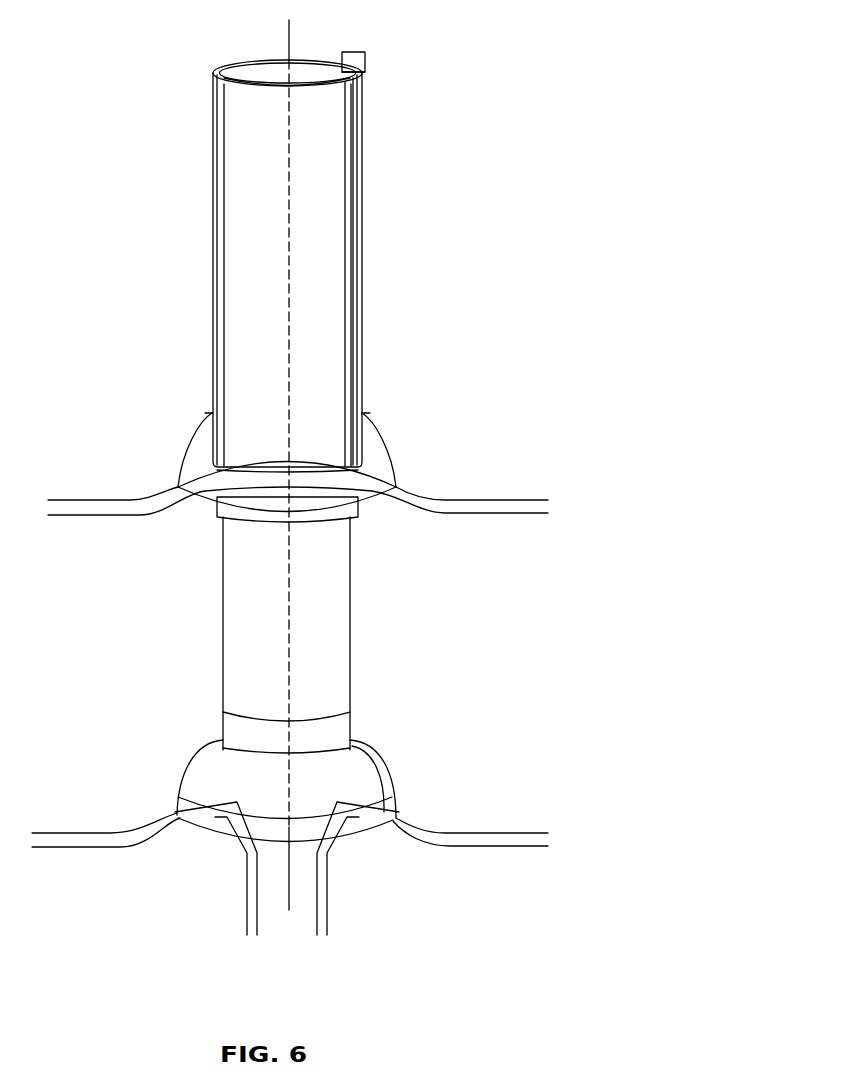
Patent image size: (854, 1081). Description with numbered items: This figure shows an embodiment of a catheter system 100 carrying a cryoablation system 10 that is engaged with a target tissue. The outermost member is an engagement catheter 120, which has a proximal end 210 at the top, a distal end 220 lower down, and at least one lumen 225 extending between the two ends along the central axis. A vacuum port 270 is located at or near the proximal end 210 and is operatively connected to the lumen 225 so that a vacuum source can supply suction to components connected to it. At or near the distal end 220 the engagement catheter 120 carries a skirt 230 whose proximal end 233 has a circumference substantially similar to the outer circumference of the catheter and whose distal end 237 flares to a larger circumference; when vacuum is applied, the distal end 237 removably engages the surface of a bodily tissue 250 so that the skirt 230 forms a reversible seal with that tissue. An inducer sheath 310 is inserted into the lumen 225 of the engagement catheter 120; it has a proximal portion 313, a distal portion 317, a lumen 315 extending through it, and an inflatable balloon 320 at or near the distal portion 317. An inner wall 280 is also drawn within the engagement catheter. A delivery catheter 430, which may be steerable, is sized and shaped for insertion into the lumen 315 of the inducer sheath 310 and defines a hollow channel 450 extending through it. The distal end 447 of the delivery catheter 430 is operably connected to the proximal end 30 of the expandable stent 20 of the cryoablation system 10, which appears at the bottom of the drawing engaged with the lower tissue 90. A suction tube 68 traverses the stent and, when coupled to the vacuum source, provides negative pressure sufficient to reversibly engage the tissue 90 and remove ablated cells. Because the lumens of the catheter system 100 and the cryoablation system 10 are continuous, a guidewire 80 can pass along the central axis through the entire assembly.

The cryoablation system 10 is at (494, 743).
The expandable stent 20 is at (388, 758).
The proximal end 30 is at (352, 719).
The suction tube 68 is at (380, 790).
The guidewire 80 is at (291, 870).
The tissue 90 is at (158, 812).
The catheter system 100 is at (147, 213).
The engagement catheter 120 is at (362, 147).
The proximal end 210 is at (368, 75).
The distal end 220 is at (152, 402).
The lumen 225 is at (247, 313).
The skirt 230 is at (373, 445).
The proximal end 233 is at (362, 417).
The distal end 237 is at (395, 487).
The tissue 250 is at (468, 503).
The vacuum port 270 is at (366, 53).
The inner tube wall 280 is at (345, 312).
The inducer sheath 310 is at (357, 230).
The proximal portion 313 is at (238, 74).
The lumen 315 is at (353, 197).
The distal portion 317 is at (167, 444).
The inflatable balloon 320 is at (347, 505).
The delivery catheter 430 is at (240, 542).
The distal end 447 is at (220, 710).
The hollow channel 450 is at (323, 587).